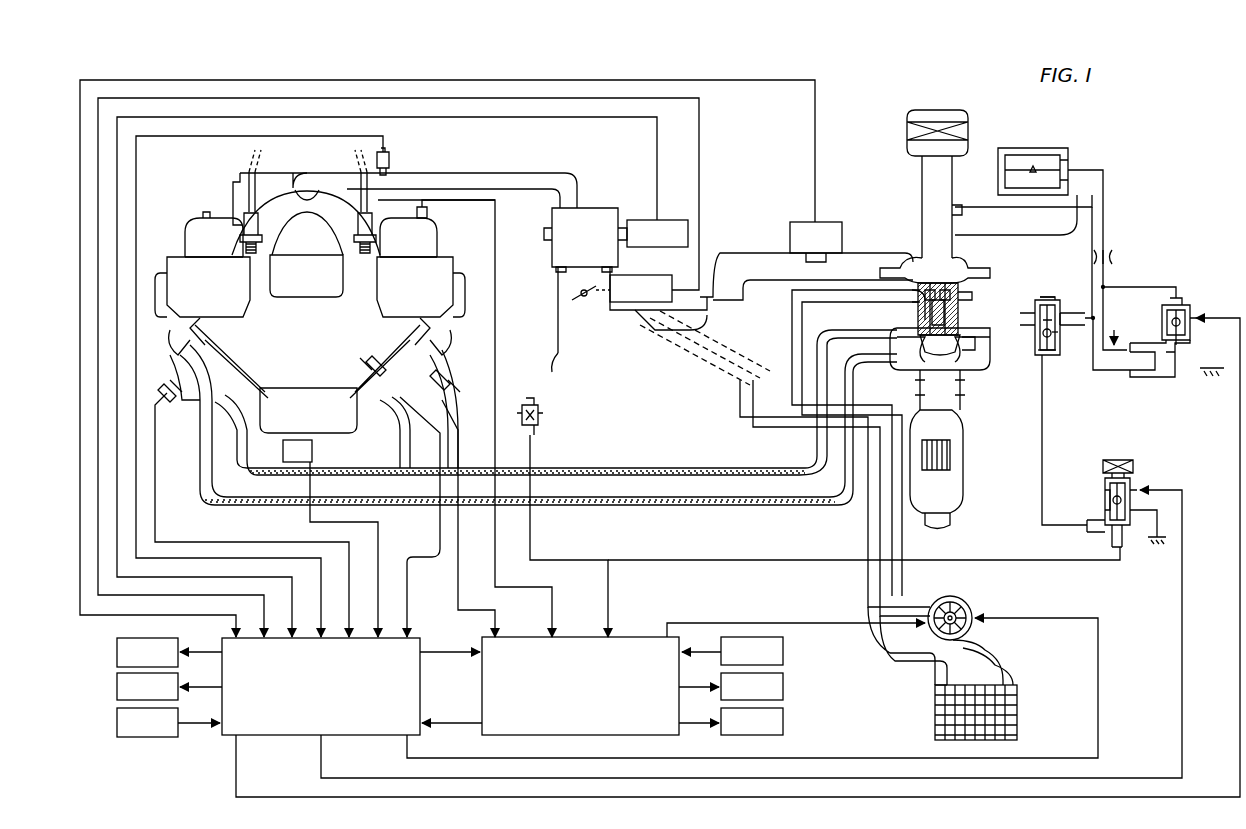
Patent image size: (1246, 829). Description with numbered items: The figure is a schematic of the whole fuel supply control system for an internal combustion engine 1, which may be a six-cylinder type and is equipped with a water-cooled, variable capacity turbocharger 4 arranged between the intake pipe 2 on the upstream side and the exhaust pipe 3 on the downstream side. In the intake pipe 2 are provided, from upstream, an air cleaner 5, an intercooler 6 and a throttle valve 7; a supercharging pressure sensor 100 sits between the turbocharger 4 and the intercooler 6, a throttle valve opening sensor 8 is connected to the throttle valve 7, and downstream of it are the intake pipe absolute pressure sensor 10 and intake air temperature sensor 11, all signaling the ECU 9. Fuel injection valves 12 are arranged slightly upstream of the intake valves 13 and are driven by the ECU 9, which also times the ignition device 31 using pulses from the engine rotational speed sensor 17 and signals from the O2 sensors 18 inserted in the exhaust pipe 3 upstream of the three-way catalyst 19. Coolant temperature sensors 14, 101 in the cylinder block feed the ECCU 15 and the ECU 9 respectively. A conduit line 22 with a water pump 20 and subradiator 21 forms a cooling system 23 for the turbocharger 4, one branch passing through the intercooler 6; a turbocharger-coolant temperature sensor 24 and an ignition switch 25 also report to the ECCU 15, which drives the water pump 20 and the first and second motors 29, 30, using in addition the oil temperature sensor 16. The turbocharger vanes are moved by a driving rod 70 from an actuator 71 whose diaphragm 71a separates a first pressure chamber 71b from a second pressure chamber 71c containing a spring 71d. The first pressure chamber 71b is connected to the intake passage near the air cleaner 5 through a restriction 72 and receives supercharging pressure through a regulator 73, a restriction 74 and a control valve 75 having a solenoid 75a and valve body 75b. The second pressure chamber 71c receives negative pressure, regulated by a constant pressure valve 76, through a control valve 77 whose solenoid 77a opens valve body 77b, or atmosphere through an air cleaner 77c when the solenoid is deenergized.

The internal combustion engine 1 is at (230, 385).
The intake pipe 2 is at (556, 172).
The exhaust pipe 3 is at (445, 340).
The turbocharger 4 is at (965, 300).
The air cleaner 5 is at (968, 130).
The intercooler 6 is at (690, 375).
The throttle valve 7 is at (580, 300).
The throttle valve opening sensor 8 is at (665, 277).
The electronic control unit (ECU) 9 is at (420, 638).
The intake pipe absolute pressure sensor 10 is at (657, 219).
The intake air temperature sensor 11 is at (392, 158).
The fuel injection valve 12 is at (243, 247).
The intake valve 13 is at (235, 290).
The first engine coolant temperature sensor 14 is at (373, 385).
The electronic cooling control unit (ECCU) 15 is at (625, 637).
The oil temperature sensor 16 is at (428, 214).
The engine rotational speed sensor 17 is at (312, 445).
The O2 sensor 18 is at (170, 403).
The three-way catalyst 19 is at (963, 470).
The water pump 20 is at (968, 600).
The subradiator 21 is at (930, 720).
The conduit line 22 is at (830, 310).
The cooling system 23 is at (933, 677).
The turbocharger-coolant temperature sensor 24 is at (960, 288).
The ignition switch 25 is at (783, 651).
The first motor 29 is at (783, 688).
The second motor 30 is at (783, 724).
The ignition device 31 is at (117, 685).
The driving rod 70 is at (968, 365).
The actuator 71 is at (1050, 370).
The diaphragm 71a is at (1050, 333).
The first pressure chamber 71b is at (1050, 355).
The second pressure chamber 71c is at (1058, 310).
The spring 71d is at (1044, 297).
The restriction 72 is at (1112, 257).
The regulator 73 is at (1075, 157).
The restriction 74 is at (1117, 325).
The control valve for introducing supercharging pressure 75 is at (1183, 303).
The solenoid 75a is at (1180, 345).
The valve body 75b is at (1148, 377).
The constant pressure valve 76 is at (543, 415).
The control valve for introducing negative pressure 77 is at (1130, 462).
The solenoid 77a is at (1105, 485).
The valve body 77b is at (1105, 530).
The air cleaner 77c is at (1134, 466).
The supercharging pressure sensor 100 is at (830, 221).
The second engine coolant temperature sensor 101 is at (117, 722).